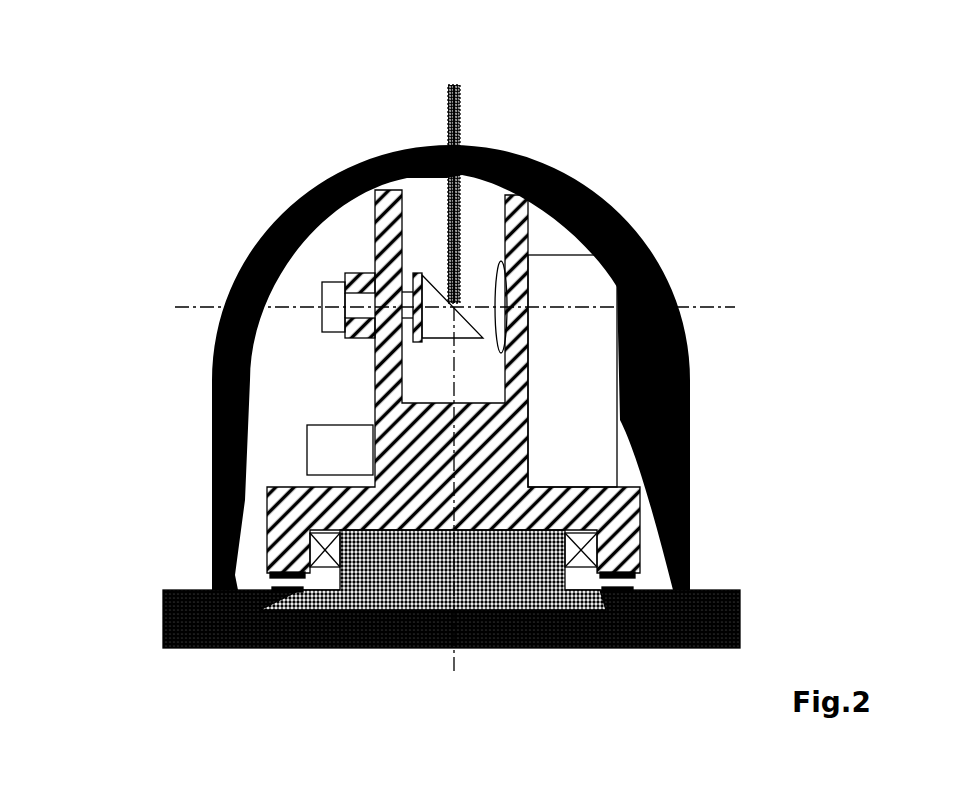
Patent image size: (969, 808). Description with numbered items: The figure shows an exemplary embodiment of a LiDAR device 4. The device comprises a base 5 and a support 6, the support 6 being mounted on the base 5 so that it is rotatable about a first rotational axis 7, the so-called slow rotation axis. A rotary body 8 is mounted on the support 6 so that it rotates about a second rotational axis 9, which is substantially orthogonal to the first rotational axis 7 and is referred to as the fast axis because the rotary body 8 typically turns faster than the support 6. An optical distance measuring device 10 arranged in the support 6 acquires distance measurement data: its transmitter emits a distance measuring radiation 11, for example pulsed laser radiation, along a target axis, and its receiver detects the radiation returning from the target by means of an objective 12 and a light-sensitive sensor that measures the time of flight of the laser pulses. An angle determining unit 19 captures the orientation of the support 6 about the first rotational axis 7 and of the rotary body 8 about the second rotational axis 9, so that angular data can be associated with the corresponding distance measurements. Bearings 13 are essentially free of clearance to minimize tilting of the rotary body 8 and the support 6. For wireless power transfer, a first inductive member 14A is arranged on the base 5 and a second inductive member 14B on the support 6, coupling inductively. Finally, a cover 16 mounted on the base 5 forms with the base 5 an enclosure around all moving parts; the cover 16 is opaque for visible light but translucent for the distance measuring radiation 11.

The LiDAR device 4 is at (163, 77).
The base 5 is at (392, 641).
The support 6 is at (380, 381).
The first rotational axis 7 is at (506, 182).
The rotary body 8 is at (456, 334).
The second rotational axis 9 is at (497, 451).
The optical distance measuring device 10 is at (588, 417).
The distance measuring radiation 11 is at (410, 182).
The objective 12 is at (457, 283).
The bearings 13 is at (570, 500).
The first inductive member 14A is at (433, 623).
The second inductive member 14B is at (558, 537).
The cover 16 is at (368, 374).
The angle determining unit 19 is at (354, 466).